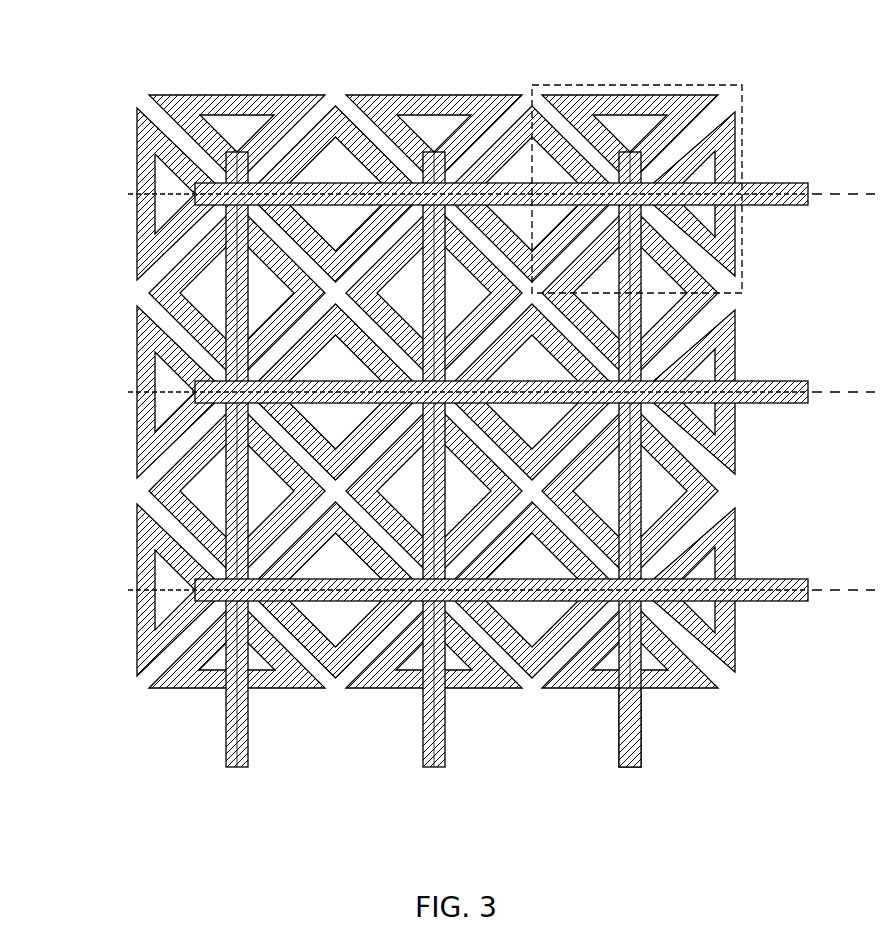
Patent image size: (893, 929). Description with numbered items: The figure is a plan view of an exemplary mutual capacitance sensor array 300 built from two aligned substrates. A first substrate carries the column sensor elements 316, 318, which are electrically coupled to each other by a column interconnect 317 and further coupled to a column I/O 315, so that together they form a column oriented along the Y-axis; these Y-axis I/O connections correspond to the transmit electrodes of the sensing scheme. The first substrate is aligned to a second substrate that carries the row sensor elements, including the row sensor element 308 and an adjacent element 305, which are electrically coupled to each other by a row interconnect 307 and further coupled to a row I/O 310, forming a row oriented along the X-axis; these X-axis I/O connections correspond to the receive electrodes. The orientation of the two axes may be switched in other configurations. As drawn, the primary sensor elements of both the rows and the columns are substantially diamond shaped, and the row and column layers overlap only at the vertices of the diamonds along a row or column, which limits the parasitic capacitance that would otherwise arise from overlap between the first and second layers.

The mutual capacitance sensor array 300 is at (278, 74).
The edge electrode pad 305 is at (688, 194).
The row interconnect 307 is at (740, 251).
The row sensor element 308 is at (532, 194).
The row I/O 310 is at (808, 184).
The column I/O 315 is at (633, 767).
The column sensor element 316 is at (630, 293).
The column interconnect 317 is at (631, 178).
The column sensor element 318 is at (630, 139).